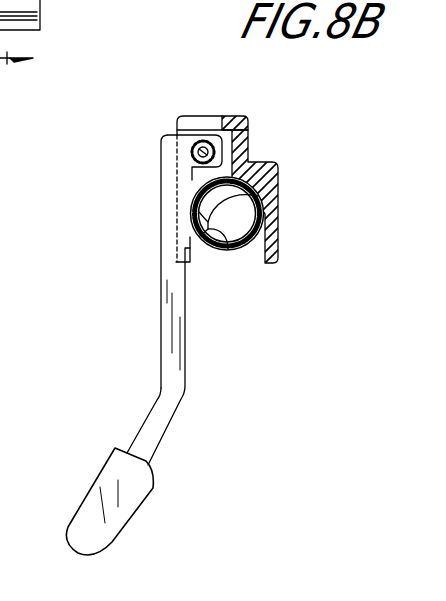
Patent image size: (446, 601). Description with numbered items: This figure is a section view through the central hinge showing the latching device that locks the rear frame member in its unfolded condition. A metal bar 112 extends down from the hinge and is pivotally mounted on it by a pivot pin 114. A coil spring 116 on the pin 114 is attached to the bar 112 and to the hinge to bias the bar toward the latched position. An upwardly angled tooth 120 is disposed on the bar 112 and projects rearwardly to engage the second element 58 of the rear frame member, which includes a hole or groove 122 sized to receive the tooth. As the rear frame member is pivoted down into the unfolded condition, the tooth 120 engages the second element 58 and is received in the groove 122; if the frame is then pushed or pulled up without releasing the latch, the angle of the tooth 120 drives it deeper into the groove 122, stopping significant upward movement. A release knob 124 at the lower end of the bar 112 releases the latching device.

The second element 58 is at (270, 246).
The metal bar 112 is at (153, 300).
The pivot pin 114 is at (235, 168).
The coil spring 116 is at (164, 122).
The upwardly angled tooth 120 is at (283, 187).
The groove 122 is at (226, 261).
The release knob 124 is at (76, 501).